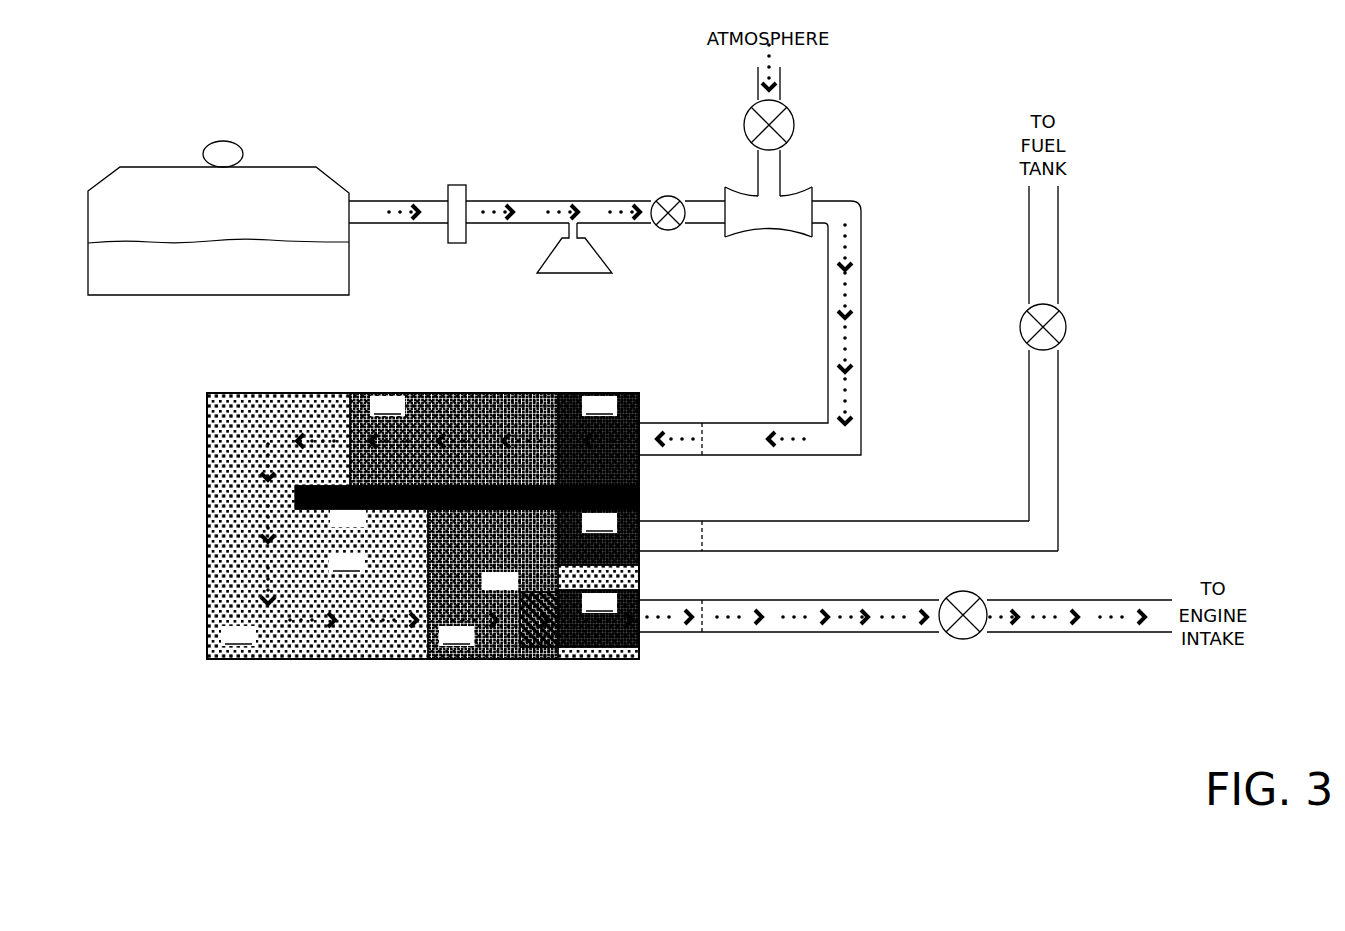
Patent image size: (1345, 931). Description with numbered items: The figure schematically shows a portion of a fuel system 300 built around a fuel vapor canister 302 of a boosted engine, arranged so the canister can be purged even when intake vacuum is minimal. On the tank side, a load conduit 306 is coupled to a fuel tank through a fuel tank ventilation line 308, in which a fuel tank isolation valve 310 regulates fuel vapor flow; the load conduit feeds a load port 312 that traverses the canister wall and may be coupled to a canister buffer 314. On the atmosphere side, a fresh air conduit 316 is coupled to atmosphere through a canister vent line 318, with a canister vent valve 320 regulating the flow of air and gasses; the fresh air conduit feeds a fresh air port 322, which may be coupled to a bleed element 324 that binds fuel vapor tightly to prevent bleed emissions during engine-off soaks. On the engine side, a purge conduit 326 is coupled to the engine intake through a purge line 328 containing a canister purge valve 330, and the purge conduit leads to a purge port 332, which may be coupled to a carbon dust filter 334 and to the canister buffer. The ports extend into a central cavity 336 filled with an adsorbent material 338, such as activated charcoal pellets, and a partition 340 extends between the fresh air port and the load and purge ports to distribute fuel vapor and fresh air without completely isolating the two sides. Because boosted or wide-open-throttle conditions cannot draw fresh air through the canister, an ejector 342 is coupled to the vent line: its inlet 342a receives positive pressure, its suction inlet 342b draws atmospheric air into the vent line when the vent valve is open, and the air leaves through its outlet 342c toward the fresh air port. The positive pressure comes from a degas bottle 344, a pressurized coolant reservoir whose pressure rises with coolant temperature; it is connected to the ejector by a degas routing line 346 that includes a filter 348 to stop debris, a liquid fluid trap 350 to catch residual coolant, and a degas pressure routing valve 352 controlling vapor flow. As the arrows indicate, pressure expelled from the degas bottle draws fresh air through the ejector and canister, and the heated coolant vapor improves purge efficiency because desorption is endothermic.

The fuel system 300 is at (173, 82).
The fuel vapor canister 302 is at (423, 512).
The load conduit 306 is at (686, 521).
The fuel tank ventilation line 308 is at (1058, 413).
The fuel tank isolation valve 310 is at (1064, 332).
The load port 312 is at (613, 531).
The canister buffer 314 is at (470, 644).
The fresh air conduit 316 is at (691, 423).
The canister vent line 318 is at (800, 455).
The canister vent valve 320 is at (790, 131).
The fresh air port 322 is at (613, 414).
The bleed element 324 is at (401, 414).
The purge conduit 326 is at (690, 633).
The purge line 328 is at (850, 633).
The canister purge valve 330 is at (965, 639).
The purge port 332 is at (613, 611).
The carbon dust filter 334 is at (525, 592).
The central cavity 336 is at (252, 644).
The adsorbent material 338 is at (360, 571).
The partition 340 is at (320, 509).
The ejector 342 is at (778, 220).
The inlet 342a is at (729, 237).
The suction inlet 342b is at (760, 175).
The outlet 342c is at (811, 191).
The degas bottle 344 is at (151, 167).
The degas routing line 346 is at (530, 201).
The filter 348 is at (458, 185).
The liquid fluid trap 350 is at (537, 273).
The degas pressure routing valve 352 is at (663, 198).